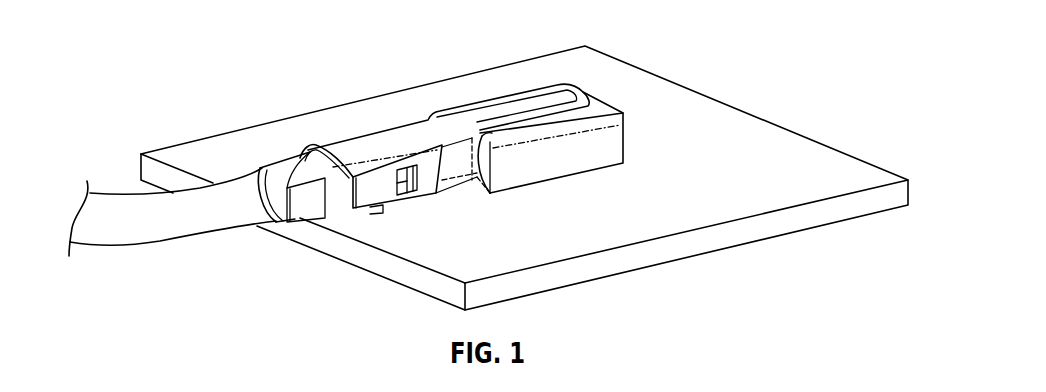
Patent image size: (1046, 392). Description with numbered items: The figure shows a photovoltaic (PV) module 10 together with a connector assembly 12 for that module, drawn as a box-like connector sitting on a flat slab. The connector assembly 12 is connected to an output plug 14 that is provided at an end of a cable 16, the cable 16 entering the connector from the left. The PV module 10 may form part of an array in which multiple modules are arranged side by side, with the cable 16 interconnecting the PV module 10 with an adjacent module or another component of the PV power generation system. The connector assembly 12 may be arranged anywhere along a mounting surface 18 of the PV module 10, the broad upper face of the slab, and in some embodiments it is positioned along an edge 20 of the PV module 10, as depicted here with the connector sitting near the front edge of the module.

The photovoltaic module 10 is at (238, 103).
The connector assembly 12 is at (472, 95).
The output plug 14 is at (288, 158).
The cable 16 is at (192, 227).
The mounting surface 18 is at (765, 142).
The edge 20 is at (663, 250).